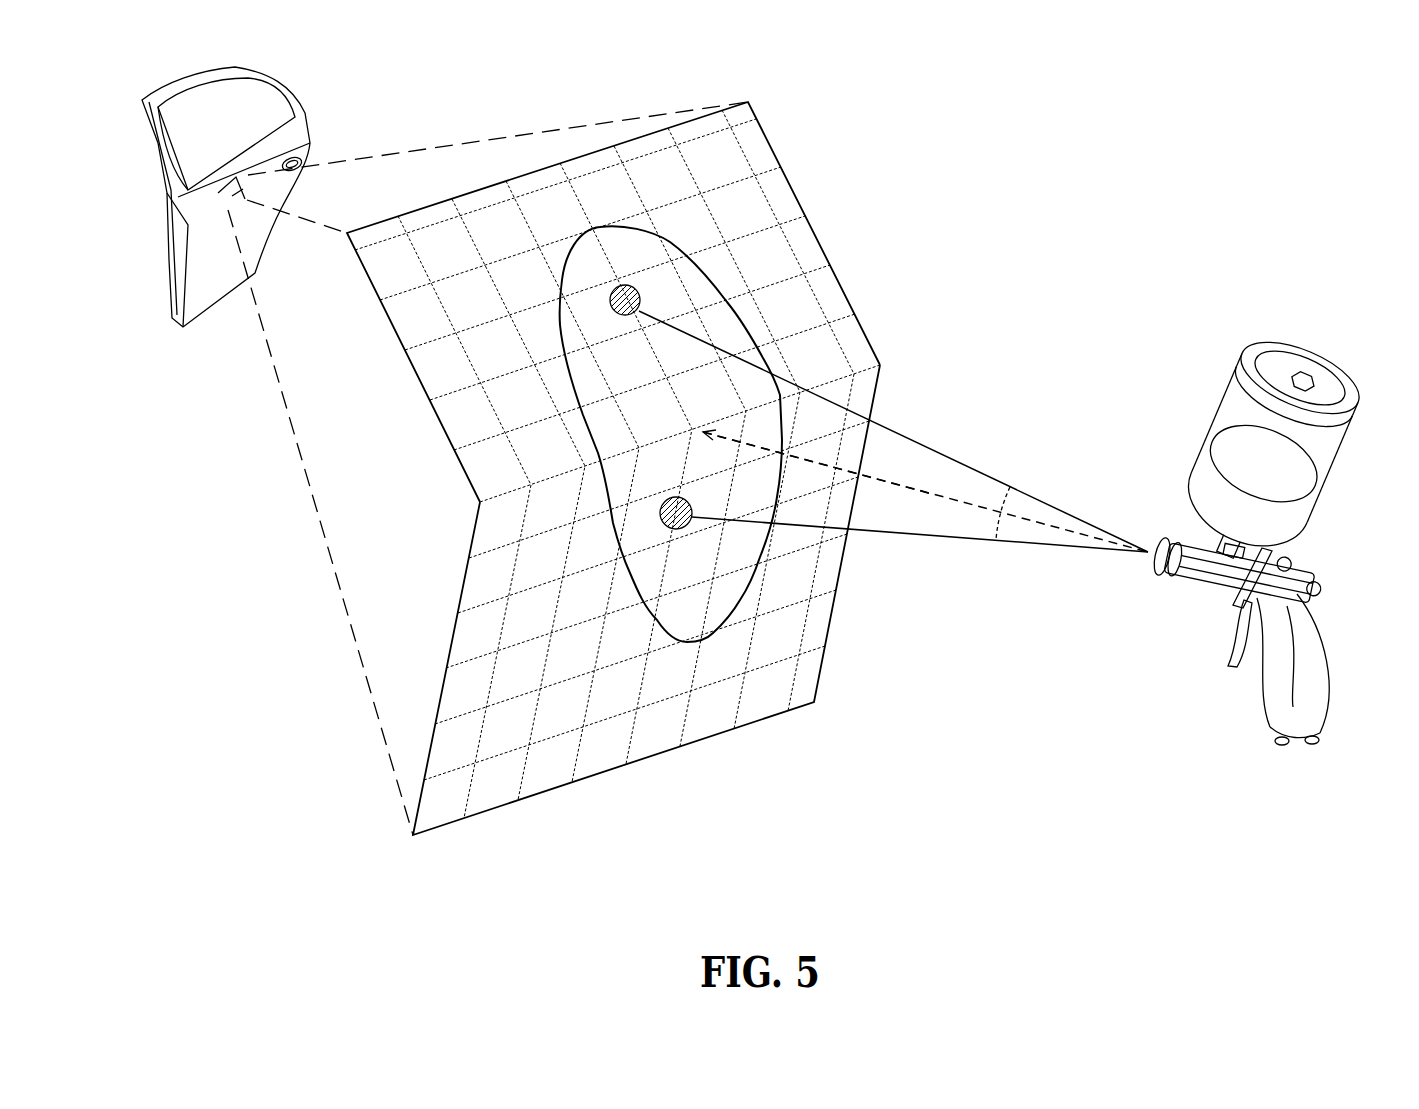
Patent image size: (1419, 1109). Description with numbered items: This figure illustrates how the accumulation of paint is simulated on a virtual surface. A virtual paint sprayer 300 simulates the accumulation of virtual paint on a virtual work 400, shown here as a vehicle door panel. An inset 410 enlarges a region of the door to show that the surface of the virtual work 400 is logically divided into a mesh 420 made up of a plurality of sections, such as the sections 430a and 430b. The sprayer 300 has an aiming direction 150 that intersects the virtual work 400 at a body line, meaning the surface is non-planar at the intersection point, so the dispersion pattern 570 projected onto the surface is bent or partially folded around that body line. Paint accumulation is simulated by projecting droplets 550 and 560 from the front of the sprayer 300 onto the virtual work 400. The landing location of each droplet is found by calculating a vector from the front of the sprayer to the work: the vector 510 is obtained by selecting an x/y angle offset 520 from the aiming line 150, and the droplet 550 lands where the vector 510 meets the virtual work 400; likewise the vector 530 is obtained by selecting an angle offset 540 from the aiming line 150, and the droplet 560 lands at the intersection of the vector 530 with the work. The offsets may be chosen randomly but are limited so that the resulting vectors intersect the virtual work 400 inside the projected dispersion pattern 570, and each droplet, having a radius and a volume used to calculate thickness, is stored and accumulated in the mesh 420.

The aiming direction 150 is at (932, 495).
The virtual paint sprayer 300 is at (1210, 737).
The virtual work 400 is at (210, 335).
The inset 410 is at (691, 468).
The mesh 420 is at (785, 223).
The section 430a is at (813, 313).
The section 430b is at (835, 365).
The vector 510 is at (1062, 515).
The offset angle 520 is at (1010, 487).
The vector 530 is at (1067, 544).
The offset angle 540 is at (1010, 515).
The droplet 550 is at (639, 290).
The droplet 560 is at (659, 528).
The dispersion pattern 570 is at (661, 636).